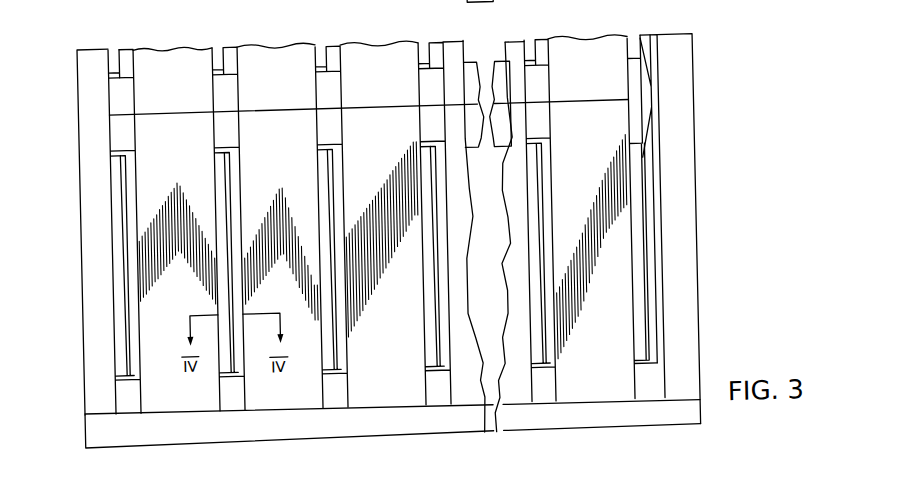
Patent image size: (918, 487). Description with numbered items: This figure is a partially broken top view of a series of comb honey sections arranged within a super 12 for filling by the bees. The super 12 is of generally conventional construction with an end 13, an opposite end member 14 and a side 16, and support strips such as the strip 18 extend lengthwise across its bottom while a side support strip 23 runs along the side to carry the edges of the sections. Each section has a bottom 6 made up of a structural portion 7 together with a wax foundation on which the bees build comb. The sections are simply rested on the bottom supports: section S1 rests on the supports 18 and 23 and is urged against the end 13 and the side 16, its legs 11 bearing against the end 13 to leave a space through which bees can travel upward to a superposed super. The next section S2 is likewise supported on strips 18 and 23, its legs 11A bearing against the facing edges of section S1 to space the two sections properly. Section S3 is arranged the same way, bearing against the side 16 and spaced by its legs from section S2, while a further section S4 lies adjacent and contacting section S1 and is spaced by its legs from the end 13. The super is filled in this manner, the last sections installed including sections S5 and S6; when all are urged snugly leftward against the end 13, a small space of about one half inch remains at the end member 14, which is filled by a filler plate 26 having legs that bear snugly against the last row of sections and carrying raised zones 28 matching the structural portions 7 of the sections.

The bottom 6 is at (584, 17).
The structural portion 7 is at (514, 16).
The legs 11 is at (117, 401).
The legs 11A is at (224, 408).
The super 12 is at (152, 453).
The end 13 is at (90, 164).
The end member 14 is at (681, 150).
The side 16 is at (279, 434).
The support strip 18 is at (115, 71).
The side support strip 23 is at (490, 235).
The filler plate 26 is at (655, 280).
The raised zones 28 is at (652, 330).
The section S1 is at (184, 131).
The section S2 is at (276, 139).
The section S3 is at (370, 136).
The section S4 is at (178, 66).
The section S5 is at (607, 211).
The section S6 is at (605, 73).